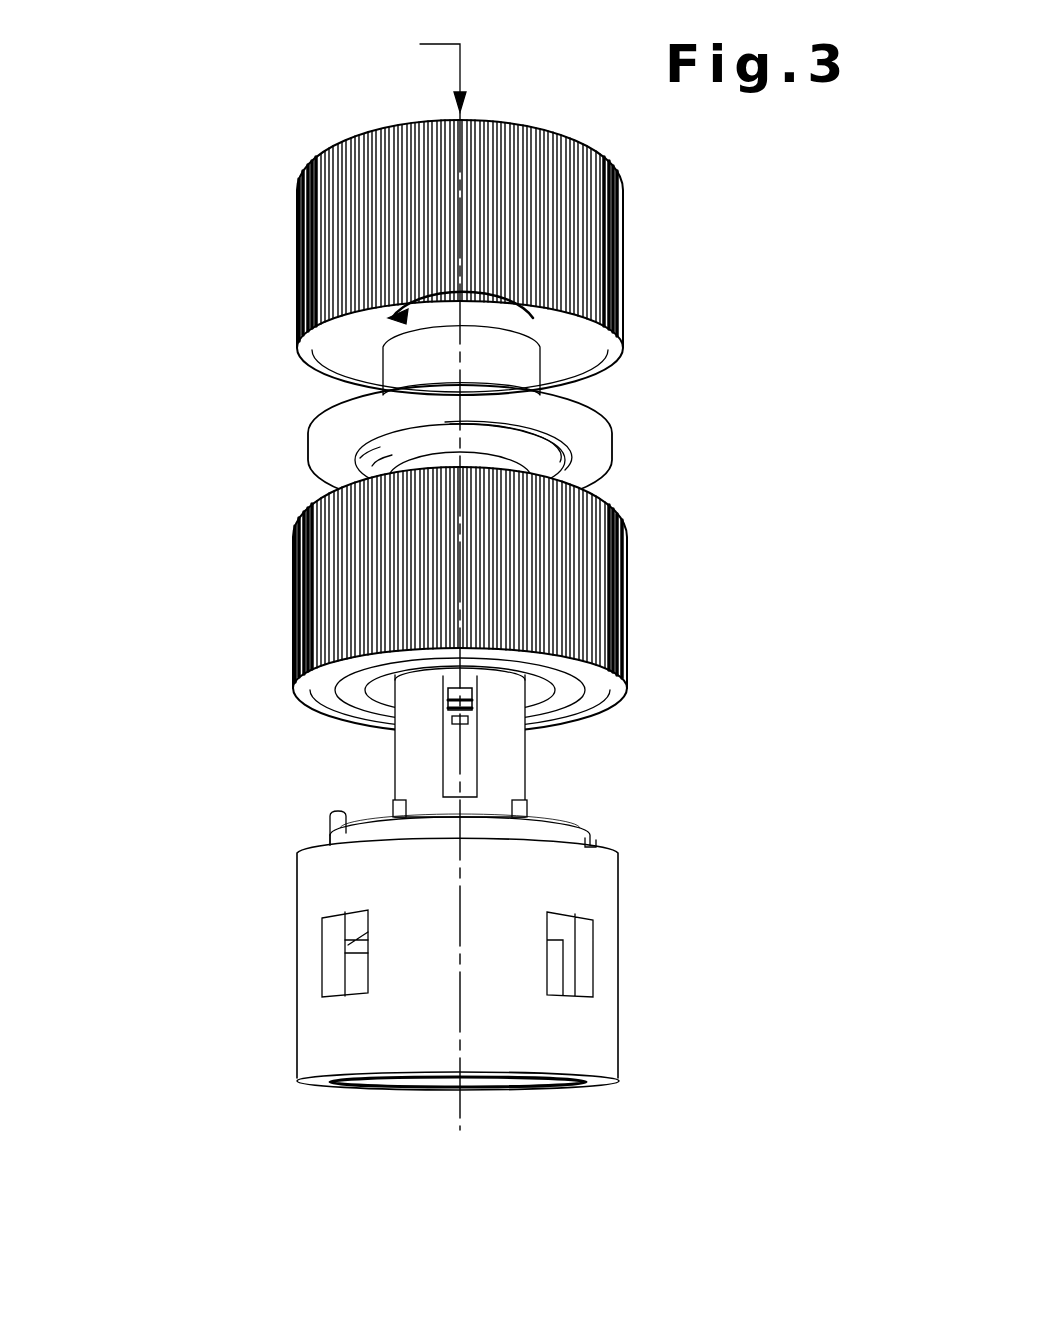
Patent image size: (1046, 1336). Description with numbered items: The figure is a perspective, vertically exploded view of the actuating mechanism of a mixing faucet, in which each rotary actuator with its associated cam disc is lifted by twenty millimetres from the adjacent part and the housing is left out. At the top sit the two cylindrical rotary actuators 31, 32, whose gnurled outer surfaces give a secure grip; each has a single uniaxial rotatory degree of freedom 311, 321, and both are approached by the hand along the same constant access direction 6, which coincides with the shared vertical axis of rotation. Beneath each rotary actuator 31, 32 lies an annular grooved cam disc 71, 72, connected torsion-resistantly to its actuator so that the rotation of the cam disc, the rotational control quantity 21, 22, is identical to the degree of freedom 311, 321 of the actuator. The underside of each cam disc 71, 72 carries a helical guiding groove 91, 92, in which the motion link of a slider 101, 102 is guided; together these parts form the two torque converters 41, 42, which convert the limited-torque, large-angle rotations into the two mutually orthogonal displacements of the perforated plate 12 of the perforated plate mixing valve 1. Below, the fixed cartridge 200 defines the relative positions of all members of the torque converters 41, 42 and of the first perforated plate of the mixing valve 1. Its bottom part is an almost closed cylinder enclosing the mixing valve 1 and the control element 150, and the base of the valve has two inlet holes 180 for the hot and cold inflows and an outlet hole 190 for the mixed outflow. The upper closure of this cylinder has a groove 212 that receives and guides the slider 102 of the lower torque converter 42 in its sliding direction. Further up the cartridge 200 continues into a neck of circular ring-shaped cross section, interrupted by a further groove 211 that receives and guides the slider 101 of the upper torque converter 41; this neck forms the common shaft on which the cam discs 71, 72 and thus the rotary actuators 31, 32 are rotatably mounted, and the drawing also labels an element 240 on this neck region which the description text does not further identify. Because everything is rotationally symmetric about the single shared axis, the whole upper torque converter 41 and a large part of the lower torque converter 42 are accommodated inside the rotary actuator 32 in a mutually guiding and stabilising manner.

The perforated plate mixing valve 1 is at (345, 990).
The access direction 6 is at (433, 73).
The perforated plate 12 is at (352, 965).
The rotational control quantity 21 is at (440, 298).
The rotational control quantity 22 is at (336, 816).
The rotary actuator 31 is at (558, 133).
The rotary actuator 32 is at (500, 697).
The torque converter 41 is at (292, 420).
The torque converter 42 is at (328, 822).
The cam disc 71 is at (325, 433).
The cam disc 72 is at (632, 683).
The helical guiding groove 91 is at (603, 422).
The helical guiding groove 92 is at (631, 650).
The slider 101 is at (505, 695).
The slider 102 is at (330, 822).
The control element 150 is at (350, 947).
The inlet holes 180 is at (513, 1087).
The outlet hole 190 is at (453, 1078).
The cartridge 200 is at (630, 568).
The groove 211 is at (453, 773).
The groove 212 is at (327, 835).
The stem 240 is at (502, 723).
The rotatory degree of freedom 311 is at (335, 150).
The rotatory degree of freedom 321 is at (336, 816).